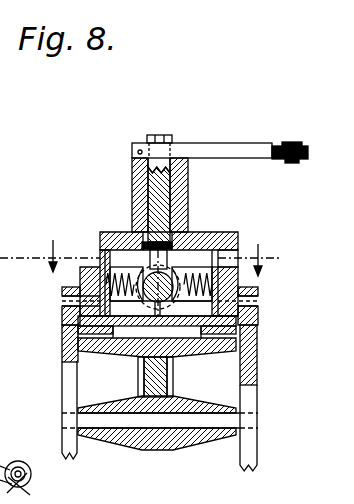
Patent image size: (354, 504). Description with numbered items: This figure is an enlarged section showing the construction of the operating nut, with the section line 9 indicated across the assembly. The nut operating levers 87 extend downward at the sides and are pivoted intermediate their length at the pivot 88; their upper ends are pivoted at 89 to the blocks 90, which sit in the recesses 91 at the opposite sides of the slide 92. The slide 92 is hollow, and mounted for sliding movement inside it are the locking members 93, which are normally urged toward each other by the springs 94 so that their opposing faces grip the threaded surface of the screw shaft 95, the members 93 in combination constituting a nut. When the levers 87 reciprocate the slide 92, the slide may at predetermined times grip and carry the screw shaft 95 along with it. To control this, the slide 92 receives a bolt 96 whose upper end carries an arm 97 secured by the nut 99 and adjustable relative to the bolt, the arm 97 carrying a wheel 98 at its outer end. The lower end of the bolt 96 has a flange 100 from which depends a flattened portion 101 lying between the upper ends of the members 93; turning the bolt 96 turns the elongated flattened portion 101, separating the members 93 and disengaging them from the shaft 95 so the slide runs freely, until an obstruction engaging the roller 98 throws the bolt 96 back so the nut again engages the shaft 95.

The section line 9- 9 is at (140, 247).
The rock levers 87 is at (62, 387).
The pivot 88 is at (95, 422).
The pivot 89 is at (62, 299).
The blocks 90 is at (88, 268).
The recesses 91 is at (224, 238).
The slide 92 is at (196, 232).
The locking members 93 is at (185, 310).
The springs 94 is at (240, 287).
The screw shaft 95 is at (130, 300).
The bolt 96 is at (157, 185).
The arm 97 is at (213, 152).
The wheel 98 is at (315, 122).
The nut 99 is at (162, 113).
The flange 100 is at (133, 222).
The flattened portion 101 is at (200, 240).